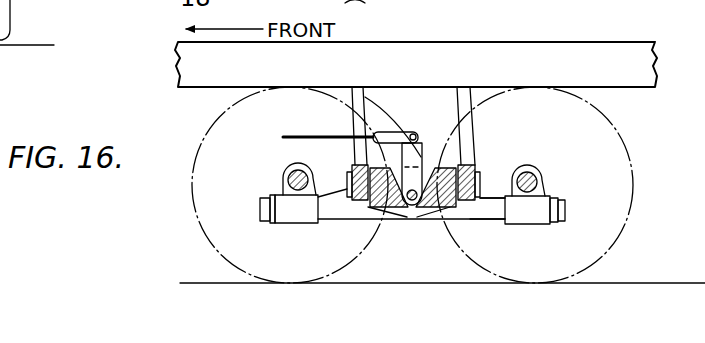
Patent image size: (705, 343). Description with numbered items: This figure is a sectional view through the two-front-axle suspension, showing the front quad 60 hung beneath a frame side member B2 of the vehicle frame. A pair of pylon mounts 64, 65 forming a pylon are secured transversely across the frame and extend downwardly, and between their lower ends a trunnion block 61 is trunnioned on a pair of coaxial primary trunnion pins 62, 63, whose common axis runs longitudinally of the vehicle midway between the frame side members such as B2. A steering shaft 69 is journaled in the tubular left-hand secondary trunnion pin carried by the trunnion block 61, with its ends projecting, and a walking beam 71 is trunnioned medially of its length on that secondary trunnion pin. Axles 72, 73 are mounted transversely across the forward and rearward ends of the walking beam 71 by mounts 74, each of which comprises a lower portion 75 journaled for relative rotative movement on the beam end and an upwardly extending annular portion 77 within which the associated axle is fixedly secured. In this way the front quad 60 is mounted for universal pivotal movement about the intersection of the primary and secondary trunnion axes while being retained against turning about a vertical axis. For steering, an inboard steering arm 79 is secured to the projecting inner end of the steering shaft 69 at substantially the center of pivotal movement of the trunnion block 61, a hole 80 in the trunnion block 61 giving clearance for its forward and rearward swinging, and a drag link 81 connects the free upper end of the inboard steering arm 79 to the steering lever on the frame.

The frame side member B2 is at (592, 45).
The front quad 60 is at (188, 200).
The trunnion block 61 is at (373, 205).
The primary trunnion pin 62 is at (350, 178).
The primary trunnion pin 63 is at (479, 177).
The pylon mount 64 is at (352, 113).
The pylon mount 65 is at (470, 125).
The steering shaft 69 is at (410, 221).
The walking beam 71 is at (475, 215).
The axle 72 is at (289, 180).
The axle 73 is at (538, 176).
The mount 74 is at (290, 226).
The lower portion 75 is at (306, 223).
The annular portion 77 is at (287, 180).
The inboard steering arm 79 is at (422, 157).
The hole 80 is at (425, 162).
The drag link 81 is at (315, 135).